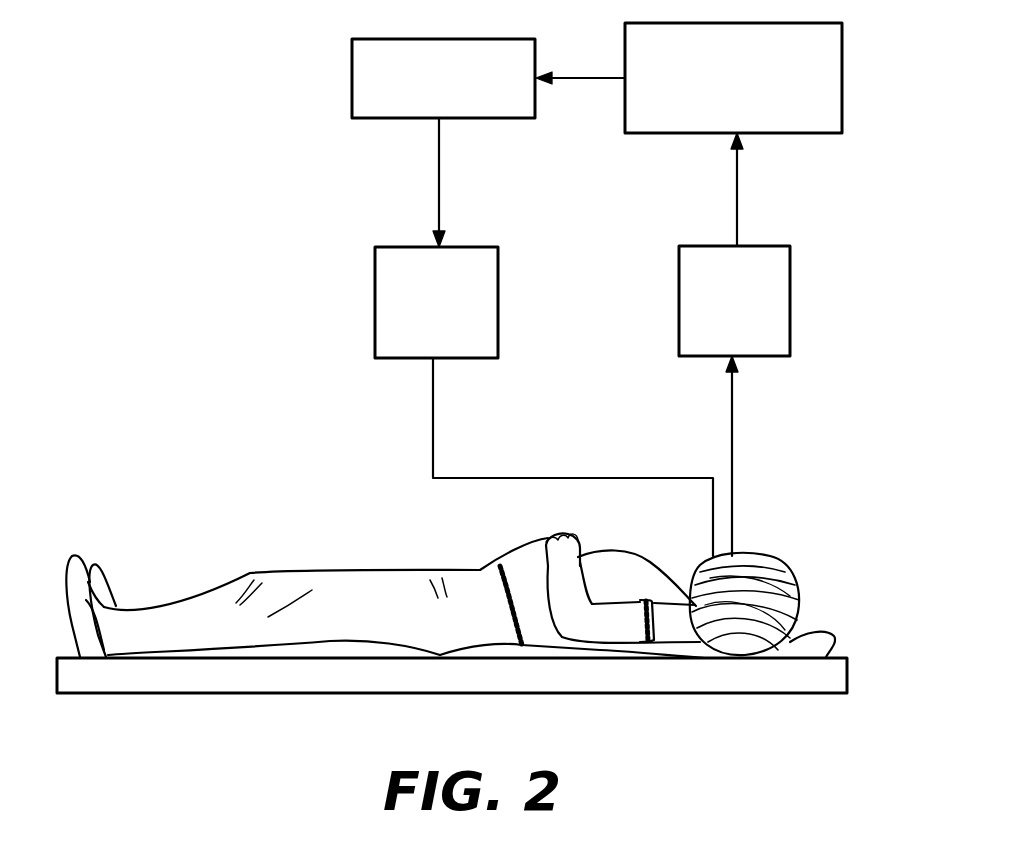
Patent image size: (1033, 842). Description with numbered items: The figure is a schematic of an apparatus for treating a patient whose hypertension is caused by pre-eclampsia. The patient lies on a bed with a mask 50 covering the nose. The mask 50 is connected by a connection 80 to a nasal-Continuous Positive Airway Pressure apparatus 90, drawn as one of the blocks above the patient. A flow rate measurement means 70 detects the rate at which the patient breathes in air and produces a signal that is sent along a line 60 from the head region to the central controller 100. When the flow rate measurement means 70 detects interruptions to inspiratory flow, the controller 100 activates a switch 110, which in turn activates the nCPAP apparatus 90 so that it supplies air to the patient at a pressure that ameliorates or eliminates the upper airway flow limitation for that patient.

The mask 50 is at (732, 556).
The signal line from head sensor 60 is at (732, 417).
The flow rate measurement means 70 is at (679, 318).
The connection 80 is at (433, 410).
The nasal-Continuous Positive Airway Pressure (nCPAP) apparatus 90 is at (375, 318).
The central controller 100 is at (797, 133).
The switch 110 is at (352, 103).